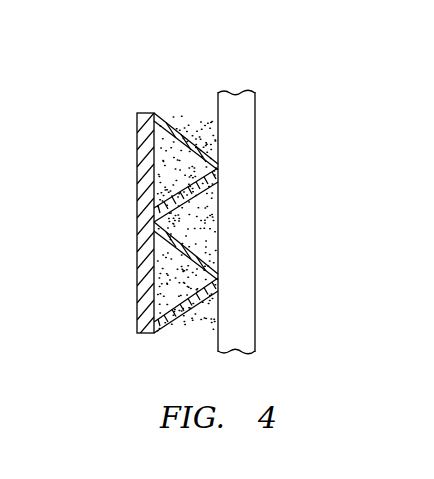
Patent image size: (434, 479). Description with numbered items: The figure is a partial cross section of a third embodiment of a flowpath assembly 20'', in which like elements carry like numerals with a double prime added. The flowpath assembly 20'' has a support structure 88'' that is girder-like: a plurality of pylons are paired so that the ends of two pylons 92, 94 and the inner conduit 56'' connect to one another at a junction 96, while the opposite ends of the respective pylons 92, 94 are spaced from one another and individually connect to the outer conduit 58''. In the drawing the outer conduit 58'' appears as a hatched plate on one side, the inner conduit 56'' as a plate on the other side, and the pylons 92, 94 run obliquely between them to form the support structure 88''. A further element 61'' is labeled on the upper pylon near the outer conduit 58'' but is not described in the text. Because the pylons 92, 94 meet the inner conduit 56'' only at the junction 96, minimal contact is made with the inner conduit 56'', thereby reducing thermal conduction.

The flowpath assembly 20'' is at (215, 212).
The outer conduit 58'' is at (102, 233).
The inner conduit 56'' is at (283, 222).
The support structure 88'' is at (192, 215).
The upper inclined layer 61'' is at (143, 145).
The junction 96 is at (219, 168).
The pylon 92 is at (205, 234).
The pylon 94 is at (190, 332).